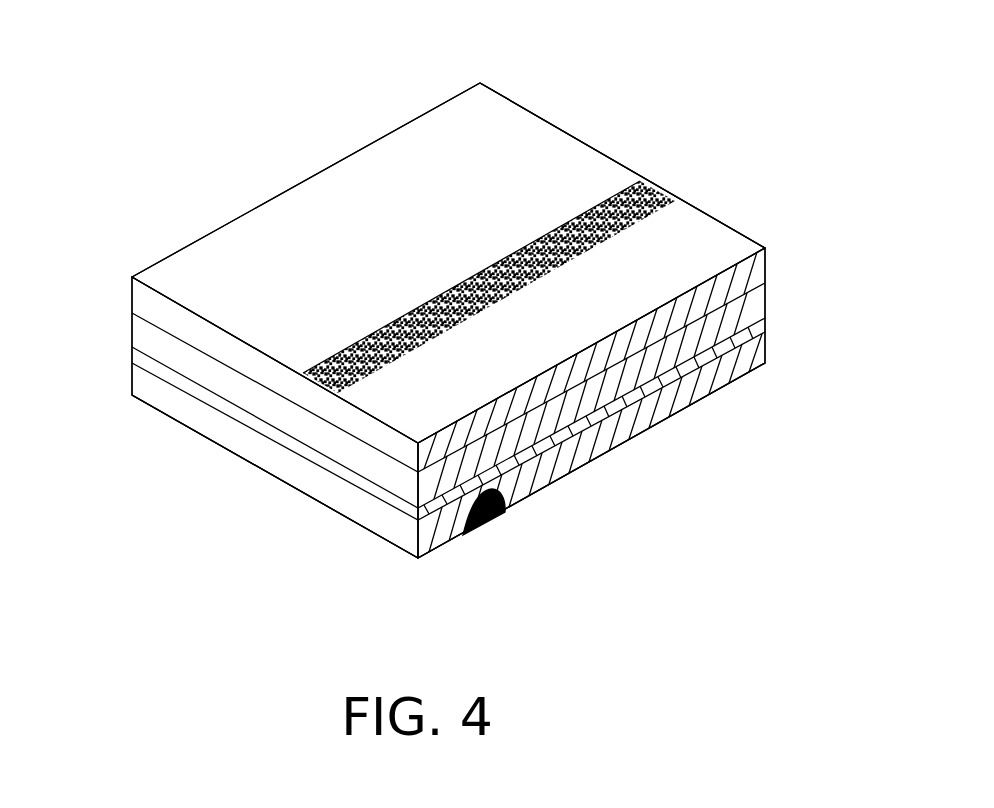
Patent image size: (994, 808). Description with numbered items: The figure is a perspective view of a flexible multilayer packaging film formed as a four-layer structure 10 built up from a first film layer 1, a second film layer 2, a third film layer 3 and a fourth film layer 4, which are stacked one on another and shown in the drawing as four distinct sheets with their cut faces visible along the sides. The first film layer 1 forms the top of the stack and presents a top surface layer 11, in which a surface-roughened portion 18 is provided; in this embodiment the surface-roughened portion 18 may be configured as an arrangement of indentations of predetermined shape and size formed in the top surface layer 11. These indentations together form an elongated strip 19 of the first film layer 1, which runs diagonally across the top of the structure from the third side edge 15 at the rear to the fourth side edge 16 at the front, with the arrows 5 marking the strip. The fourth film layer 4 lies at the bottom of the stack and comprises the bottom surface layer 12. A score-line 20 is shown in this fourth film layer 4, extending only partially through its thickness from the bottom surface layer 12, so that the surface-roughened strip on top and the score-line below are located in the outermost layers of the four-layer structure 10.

The first film layer 1 is at (132, 293).
The second film layer 2 is at (132, 325).
The third film layer 3 is at (132, 353).
The fourth film layer 4 is at (132, 378).
The width of strip 5 is at (488, 304).
The four-layer structure 10 is at (450, 292).
The top surface layer 11 is at (250, 287).
The bottom surface layer 12 is at (592, 464).
The third side edge 15 is at (585, 140).
The fourth side edge 16 is at (273, 477).
The surface-roughened portion 18 is at (578, 218).
The elongated strip 19 is at (508, 256).
The score-line 20 is at (487, 522).